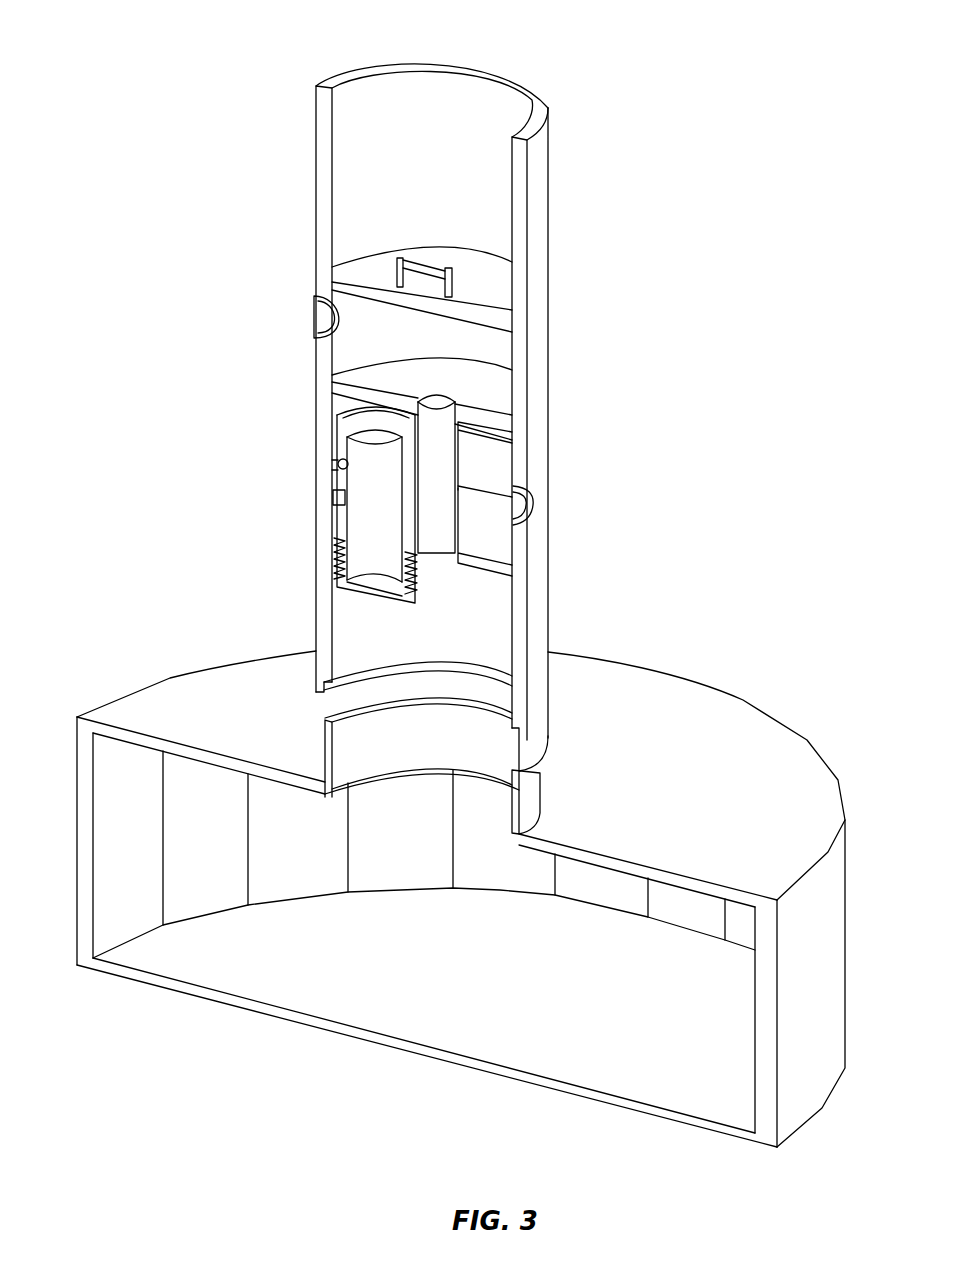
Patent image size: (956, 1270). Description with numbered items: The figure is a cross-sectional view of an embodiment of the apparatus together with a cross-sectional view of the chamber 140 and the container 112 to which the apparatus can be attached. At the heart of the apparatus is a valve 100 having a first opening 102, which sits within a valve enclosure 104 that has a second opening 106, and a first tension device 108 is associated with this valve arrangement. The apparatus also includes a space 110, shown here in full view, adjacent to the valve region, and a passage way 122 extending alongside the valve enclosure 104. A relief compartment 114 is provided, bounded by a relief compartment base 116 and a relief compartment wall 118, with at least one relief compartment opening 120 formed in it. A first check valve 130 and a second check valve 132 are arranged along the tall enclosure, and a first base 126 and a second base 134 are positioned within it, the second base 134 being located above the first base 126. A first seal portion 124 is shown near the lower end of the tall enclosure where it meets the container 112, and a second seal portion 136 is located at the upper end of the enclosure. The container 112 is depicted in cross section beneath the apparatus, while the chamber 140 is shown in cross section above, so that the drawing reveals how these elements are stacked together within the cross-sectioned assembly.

The valve 100 is at (388, 560).
The first opening 102 is at (340, 462).
The valve enclosure 104 is at (393, 437).
The second opening 106 is at (335, 498).
The first tension device 108 is at (416, 571).
The space 110 is at (457, 644).
The container 112 is at (487, 967).
The relief compartment 114 is at (502, 479).
The relief compartment base 116 is at (502, 537).
The relief compartment wall 118 is at (548, 452).
The relief compartment opening 120 is at (535, 498).
The passage way 122 is at (457, 479).
The first seal portion 124 is at (360, 682).
The first base 126 is at (495, 404).
The first check valve 130 is at (433, 398).
The second check valve 132 is at (312, 318).
The second base 134 is at (495, 293).
The second seal portion 136 is at (330, 86).
The chamber 140 is at (469, 349).